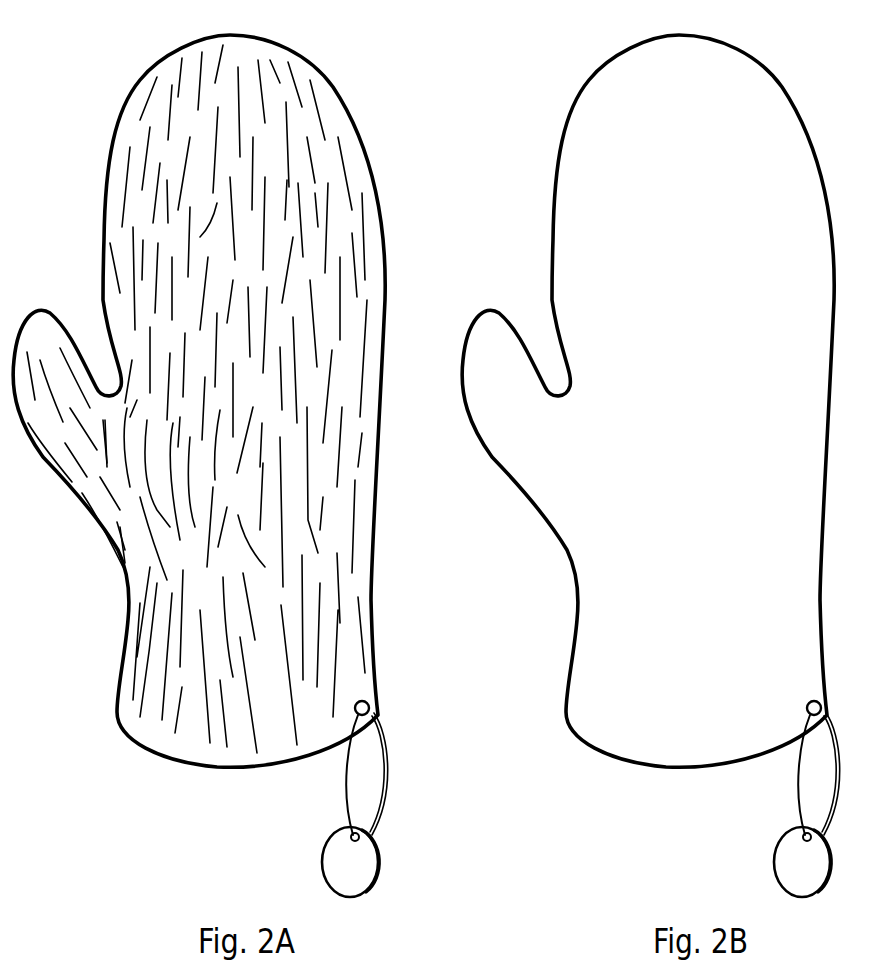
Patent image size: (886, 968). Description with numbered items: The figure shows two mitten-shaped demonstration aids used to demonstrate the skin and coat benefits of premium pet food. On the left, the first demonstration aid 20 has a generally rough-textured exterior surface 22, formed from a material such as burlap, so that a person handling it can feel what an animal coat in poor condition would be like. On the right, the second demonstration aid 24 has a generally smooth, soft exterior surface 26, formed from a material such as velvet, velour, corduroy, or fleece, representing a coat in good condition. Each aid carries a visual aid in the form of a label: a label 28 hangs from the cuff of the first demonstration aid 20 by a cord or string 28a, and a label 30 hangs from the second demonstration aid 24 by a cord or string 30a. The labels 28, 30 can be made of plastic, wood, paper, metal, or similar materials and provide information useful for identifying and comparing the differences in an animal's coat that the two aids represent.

In FIG. 2A, the first demonstration aid 20 is at (234, 401).
In FIG. 2A, the exterior surface 22 is at (283, 213).
In FIG. 2B, the second demonstration aid 24 is at (660, 397).
In FIG. 2B, the exterior surface 26 is at (665, 118).
In FIG. 2A, the label 28 is at (369, 858).
In FIG. 2A, the cord or string 28a is at (383, 803).
In FIG. 2B, the label 30 is at (788, 866).
In FIG. 2B, the cord or string 30a is at (795, 790).